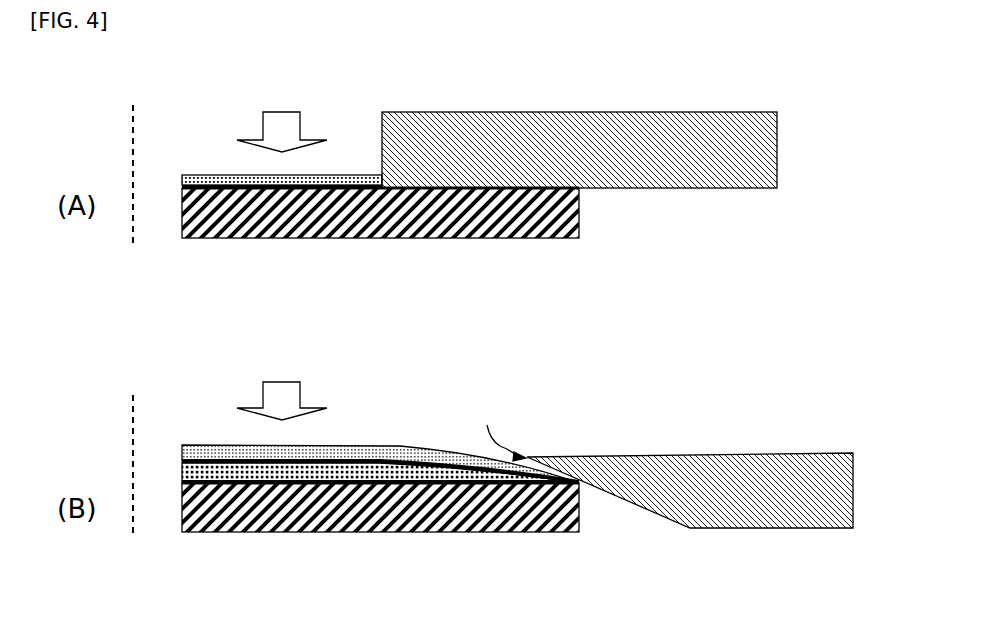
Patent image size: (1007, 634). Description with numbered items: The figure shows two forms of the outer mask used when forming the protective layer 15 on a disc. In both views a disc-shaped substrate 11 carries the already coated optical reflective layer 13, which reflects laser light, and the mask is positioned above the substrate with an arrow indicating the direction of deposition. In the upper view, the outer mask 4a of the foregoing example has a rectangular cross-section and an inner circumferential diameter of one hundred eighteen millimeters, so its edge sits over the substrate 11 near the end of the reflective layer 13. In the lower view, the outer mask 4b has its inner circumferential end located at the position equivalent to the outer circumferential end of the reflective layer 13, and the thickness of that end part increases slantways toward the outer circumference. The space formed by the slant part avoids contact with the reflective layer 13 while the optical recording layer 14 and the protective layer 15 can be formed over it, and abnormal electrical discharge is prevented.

The substrate 11 is at (233, 222).
The optical reflective layer 13 is at (318, 187).
The optical recording layer 14 is at (462, 470).
The protective layer 15 is at (398, 458).
The outer mask 4a is at (708, 177).
The outer mask 4b is at (725, 500).